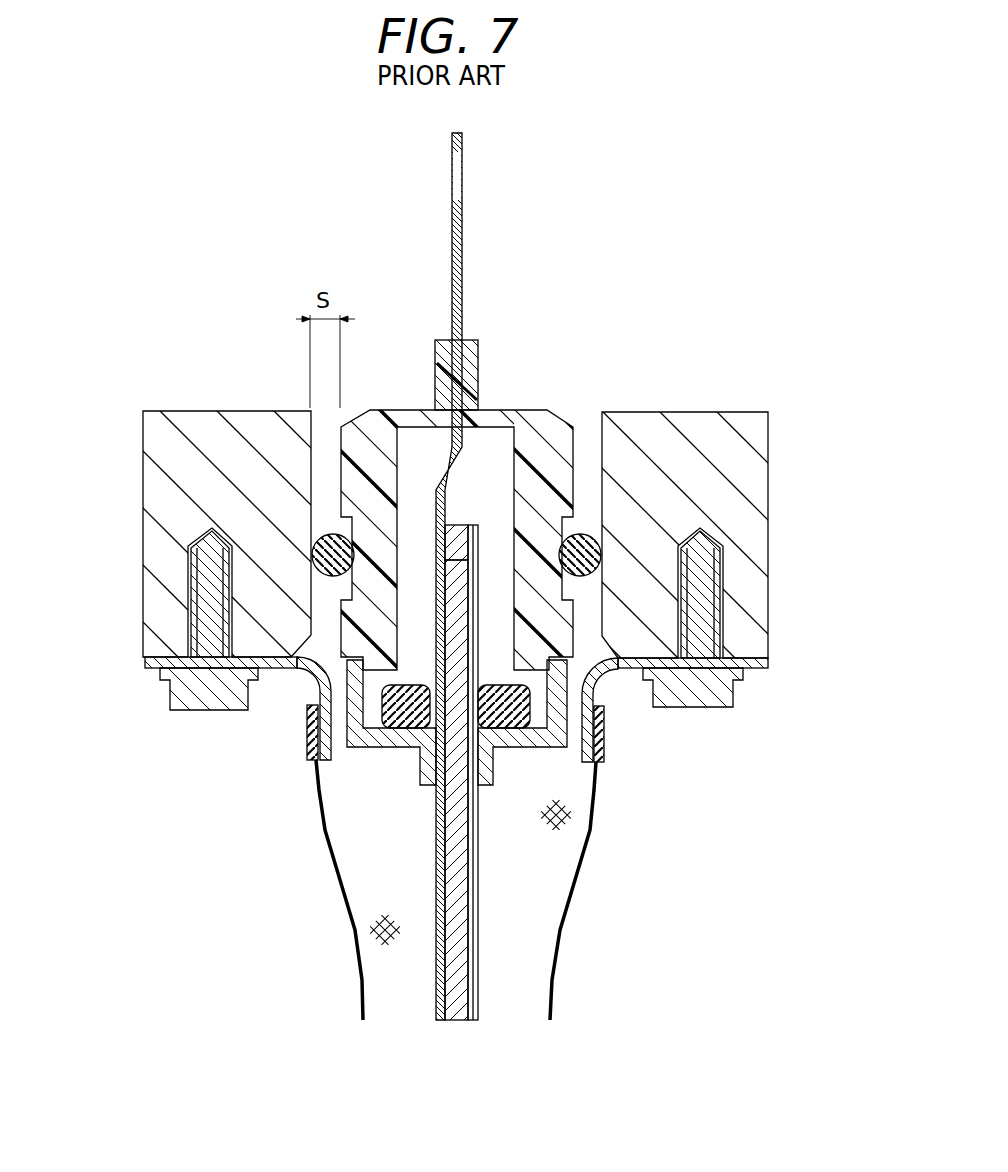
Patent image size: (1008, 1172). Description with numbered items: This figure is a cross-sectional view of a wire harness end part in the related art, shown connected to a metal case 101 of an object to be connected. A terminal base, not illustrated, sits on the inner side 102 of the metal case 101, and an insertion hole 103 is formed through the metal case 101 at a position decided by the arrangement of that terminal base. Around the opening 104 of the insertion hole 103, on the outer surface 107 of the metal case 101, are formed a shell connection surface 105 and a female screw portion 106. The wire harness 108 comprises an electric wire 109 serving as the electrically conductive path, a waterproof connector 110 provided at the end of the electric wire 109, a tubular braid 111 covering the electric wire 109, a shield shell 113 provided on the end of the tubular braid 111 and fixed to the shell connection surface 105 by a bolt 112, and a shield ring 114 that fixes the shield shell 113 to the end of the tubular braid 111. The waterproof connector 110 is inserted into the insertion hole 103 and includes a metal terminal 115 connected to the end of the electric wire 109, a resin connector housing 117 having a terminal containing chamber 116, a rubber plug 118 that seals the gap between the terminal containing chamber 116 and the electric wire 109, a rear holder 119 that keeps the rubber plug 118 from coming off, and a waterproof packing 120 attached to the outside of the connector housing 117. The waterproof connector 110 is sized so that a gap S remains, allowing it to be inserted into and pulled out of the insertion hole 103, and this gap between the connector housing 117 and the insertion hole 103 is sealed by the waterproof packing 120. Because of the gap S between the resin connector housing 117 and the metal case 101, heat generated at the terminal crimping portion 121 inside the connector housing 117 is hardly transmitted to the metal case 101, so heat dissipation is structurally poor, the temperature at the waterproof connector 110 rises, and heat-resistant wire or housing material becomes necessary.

The metal case 101 is at (181, 408).
The inner side 102 is at (683, 310).
The insertion hole 103 is at (576, 440).
The opening 104 is at (617, 671).
The shell connection surface 105 is at (268, 672).
The female screw portion 106 is at (200, 620).
The outer surface 107 is at (162, 670).
The wire harness 108 is at (563, 960).
The electric wire 109 is at (480, 985).
The waterproof connector 110 is at (474, 483).
The tubular braid 111 is at (355, 932).
The bolt 112 is at (207, 690).
The shield shell 113 is at (597, 684).
The shield ring 114 is at (606, 748).
The metal terminal 115 is at (451, 273).
The terminal containing chamber 116 is at (512, 458).
The connector housing 117 is at (586, 534).
The rubber plug 118 is at (398, 722).
The rear holder 119 is at (410, 742).
The waterproof packing 120 is at (318, 546).
The terminal crimping portion 121 is at (472, 556).